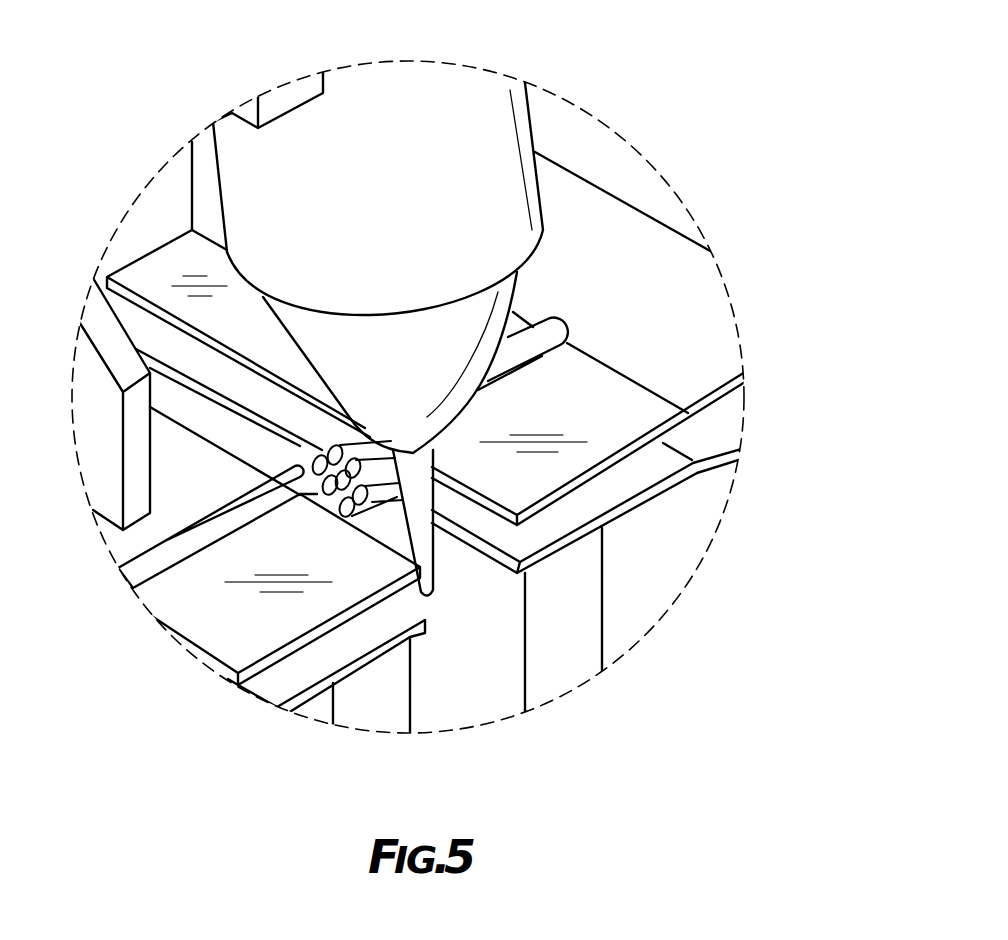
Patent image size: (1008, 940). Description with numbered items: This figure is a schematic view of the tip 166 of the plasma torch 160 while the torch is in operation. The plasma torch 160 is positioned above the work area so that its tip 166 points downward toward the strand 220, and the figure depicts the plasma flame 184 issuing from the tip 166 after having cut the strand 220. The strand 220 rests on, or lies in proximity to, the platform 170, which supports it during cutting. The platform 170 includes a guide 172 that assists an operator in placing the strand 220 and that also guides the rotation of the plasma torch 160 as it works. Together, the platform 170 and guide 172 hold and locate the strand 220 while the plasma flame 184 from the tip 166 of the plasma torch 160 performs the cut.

The plasma torch 160 is at (497, 92).
The tip 166 is at (265, 228).
The platform 170 is at (642, 420).
The guide 172 is at (562, 647).
The plasma flame 184 is at (427, 510).
The strand 220 is at (552, 332).